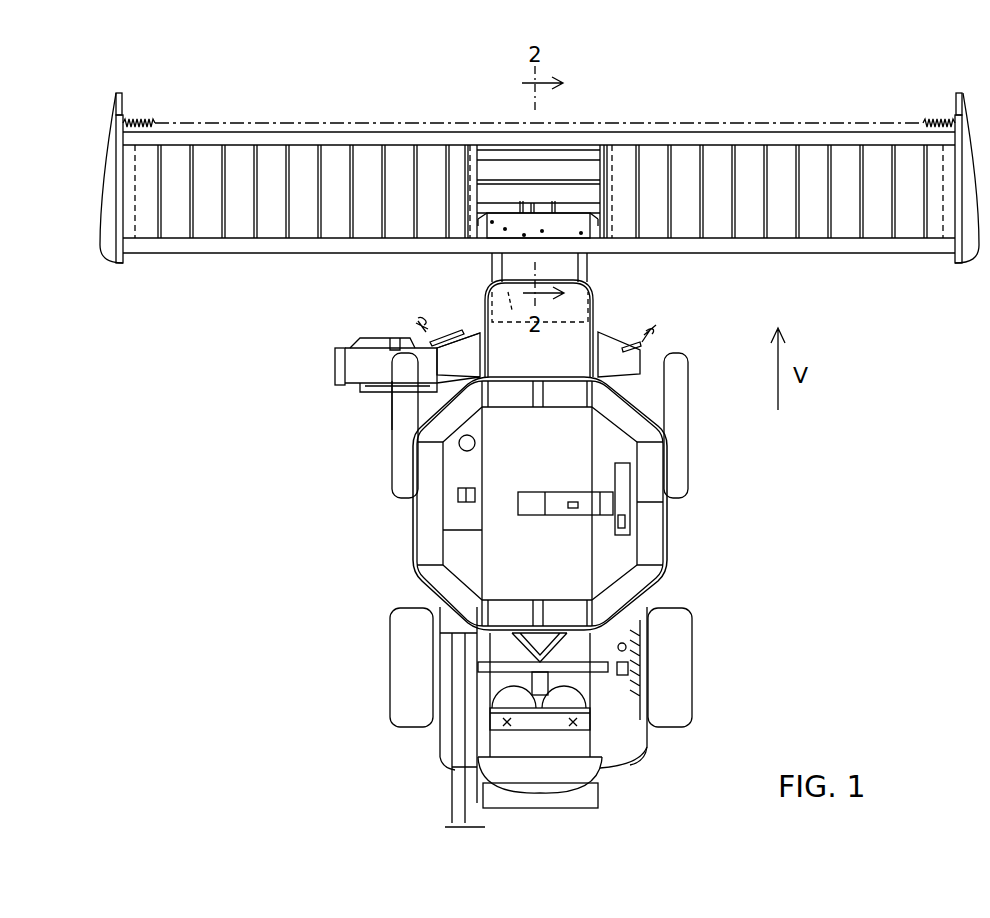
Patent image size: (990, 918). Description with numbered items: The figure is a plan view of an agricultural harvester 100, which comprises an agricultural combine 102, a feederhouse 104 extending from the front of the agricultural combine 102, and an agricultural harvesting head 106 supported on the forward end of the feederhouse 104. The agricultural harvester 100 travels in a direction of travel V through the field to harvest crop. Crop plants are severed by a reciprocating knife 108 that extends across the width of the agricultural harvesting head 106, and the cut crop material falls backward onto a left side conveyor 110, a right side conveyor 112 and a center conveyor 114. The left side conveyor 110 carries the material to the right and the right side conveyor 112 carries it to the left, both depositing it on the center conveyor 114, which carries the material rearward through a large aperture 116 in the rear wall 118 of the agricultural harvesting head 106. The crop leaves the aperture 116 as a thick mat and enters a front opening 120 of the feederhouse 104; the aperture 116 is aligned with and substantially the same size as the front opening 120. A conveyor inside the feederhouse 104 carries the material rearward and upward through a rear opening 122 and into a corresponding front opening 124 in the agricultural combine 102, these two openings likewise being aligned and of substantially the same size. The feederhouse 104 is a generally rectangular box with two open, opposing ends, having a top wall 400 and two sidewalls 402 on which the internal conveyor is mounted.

The agricultural harvester 100 is at (230, 512).
The agricultural combine 102 is at (668, 527).
The feederhouse 104 is at (565, 271).
The agricultural harvesting head 106 is at (744, 78).
The reciprocating knife 108 is at (157, 236).
The left side conveyor 110 is at (237, 228).
The right side conveyor 112 is at (843, 226).
The center conveyor 114 is at (497, 153).
The large aperture 116 is at (565, 245).
The rear wall 118 is at (676, 245).
The front opening 120 is at (538, 219).
The rear opening 122 is at (490, 275).
The front opening 124 is at (540, 307).
The top wall 400 is at (596, 290).
The sidewalls 402 is at (487, 293).